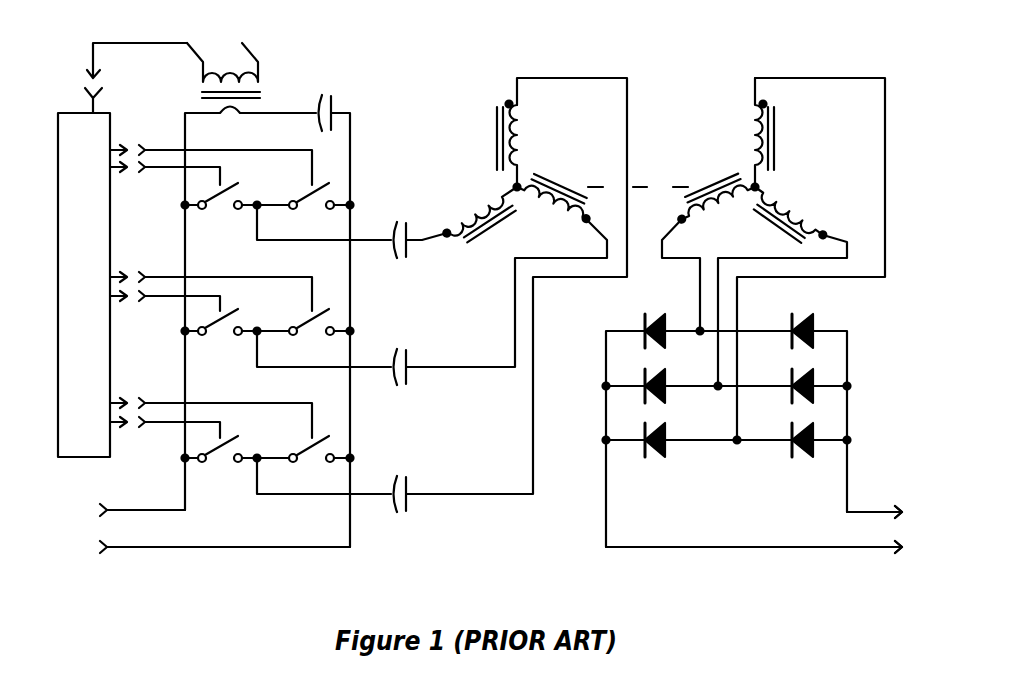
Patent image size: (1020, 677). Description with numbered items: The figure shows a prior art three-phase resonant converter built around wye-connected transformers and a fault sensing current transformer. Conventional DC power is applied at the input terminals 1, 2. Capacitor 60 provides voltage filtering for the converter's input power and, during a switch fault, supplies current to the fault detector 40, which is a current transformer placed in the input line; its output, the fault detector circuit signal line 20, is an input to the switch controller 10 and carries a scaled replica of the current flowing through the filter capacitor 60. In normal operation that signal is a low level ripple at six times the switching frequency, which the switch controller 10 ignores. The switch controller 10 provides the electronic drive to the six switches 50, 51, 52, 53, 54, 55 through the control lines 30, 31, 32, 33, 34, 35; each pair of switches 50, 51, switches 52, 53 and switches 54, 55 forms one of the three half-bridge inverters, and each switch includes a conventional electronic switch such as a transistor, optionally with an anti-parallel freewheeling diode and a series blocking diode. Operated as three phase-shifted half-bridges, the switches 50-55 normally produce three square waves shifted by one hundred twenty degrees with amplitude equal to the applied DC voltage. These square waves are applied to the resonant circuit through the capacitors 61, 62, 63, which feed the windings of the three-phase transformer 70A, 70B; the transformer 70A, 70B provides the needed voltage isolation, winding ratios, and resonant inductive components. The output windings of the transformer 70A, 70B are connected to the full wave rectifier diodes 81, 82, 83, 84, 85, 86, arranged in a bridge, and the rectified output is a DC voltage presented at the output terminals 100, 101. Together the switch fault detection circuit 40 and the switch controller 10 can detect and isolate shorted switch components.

The input terminal 1 is at (100, 548).
The input terminal 2 is at (100, 512).
The switch controller 10 is at (73, 458).
The fault detector circuit signal line 20 is at (99, 78).
The control line 30 is at (121, 150).
The control line 31 is at (121, 168).
The control line 32 is at (123, 277).
The control line 33 is at (122, 296).
The control line 34 is at (121, 403).
The control line 35 is at (121, 427).
The switch fault detection circuit 40 is at (262, 82).
The switch 50 is at (318, 198).
The switch 51 is at (227, 198).
The switch 52 is at (318, 324).
The switch 53 is at (227, 324).
The switch 54 is at (318, 451).
The switch 55 is at (227, 451).
The capacitor 60 is at (325, 94).
The capacitor 61 is at (392, 262).
The capacitor 62 is at (392, 388).
The capacitor 63 is at (392, 516).
The three-phase transformer 70A is at (543, 210).
The three-phase transformer 70B is at (753, 202).
The full wave rectifier diode 81 is at (641, 345).
The full wave rectifier diode 82 is at (787, 345).
The full wave rectifier diode 83 is at (641, 400).
The full wave rectifier diode 84 is at (789, 393).
The full wave rectifier diode 85 is at (641, 455).
The full wave rectifier diode 86 is at (787, 447).
The output terminal 100 is at (893, 562).
The output terminal 101 is at (893, 516).